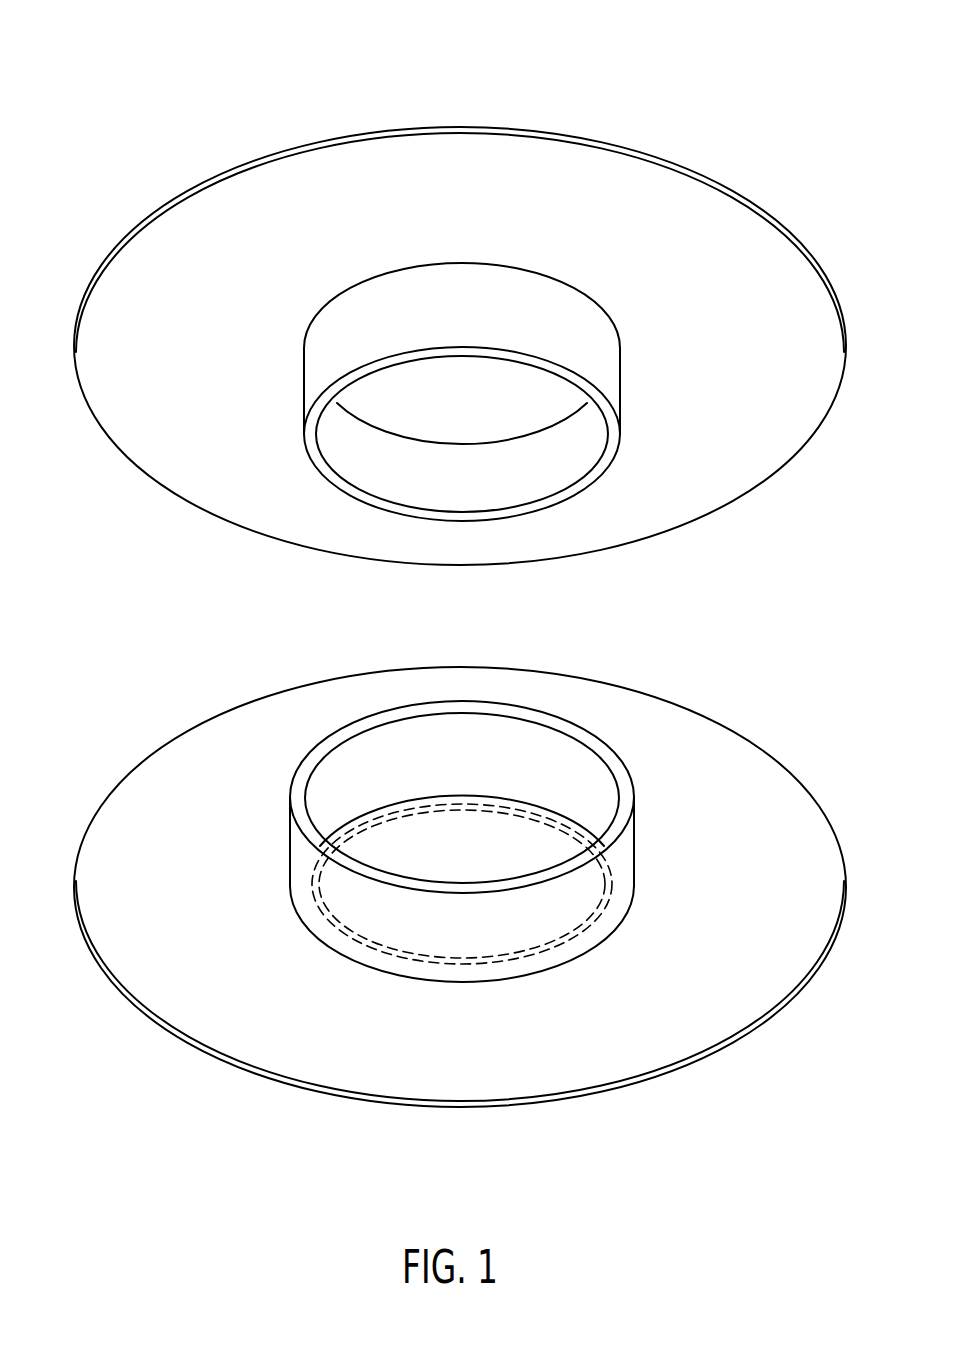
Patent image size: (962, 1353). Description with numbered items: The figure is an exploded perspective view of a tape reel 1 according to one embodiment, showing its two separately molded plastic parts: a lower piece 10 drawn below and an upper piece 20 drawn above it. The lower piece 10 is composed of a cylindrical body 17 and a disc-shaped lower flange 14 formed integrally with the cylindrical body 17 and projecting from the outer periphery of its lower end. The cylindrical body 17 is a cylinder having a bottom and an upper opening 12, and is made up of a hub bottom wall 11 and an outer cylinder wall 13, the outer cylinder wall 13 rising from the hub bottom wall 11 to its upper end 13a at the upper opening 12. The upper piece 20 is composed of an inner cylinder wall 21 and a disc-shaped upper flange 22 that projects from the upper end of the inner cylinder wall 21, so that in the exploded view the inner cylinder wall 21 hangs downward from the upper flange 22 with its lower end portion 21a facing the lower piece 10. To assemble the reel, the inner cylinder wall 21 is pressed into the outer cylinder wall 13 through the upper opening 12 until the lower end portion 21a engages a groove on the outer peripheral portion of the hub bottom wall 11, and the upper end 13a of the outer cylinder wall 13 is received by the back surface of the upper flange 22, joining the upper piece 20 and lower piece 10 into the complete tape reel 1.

The tape reel 1 is at (112, 70).
The lower piece 10 is at (699, 1077).
The hub bottom wall 11 is at (533, 842).
The upper opening 12 is at (470, 741).
The outer cylinder wall 13 is at (636, 854).
The upper end of the outer cylinder wall 13a is at (562, 725).
The lower flange 14 is at (765, 770).
The cylindrical body 17 is at (261, 870).
The upper piece 20 is at (812, 213).
The inner cylinder wall 21 is at (560, 453).
The lower end portion of the inner cylinder wall 21a is at (335, 473).
The upper flange 22 is at (453, 158).